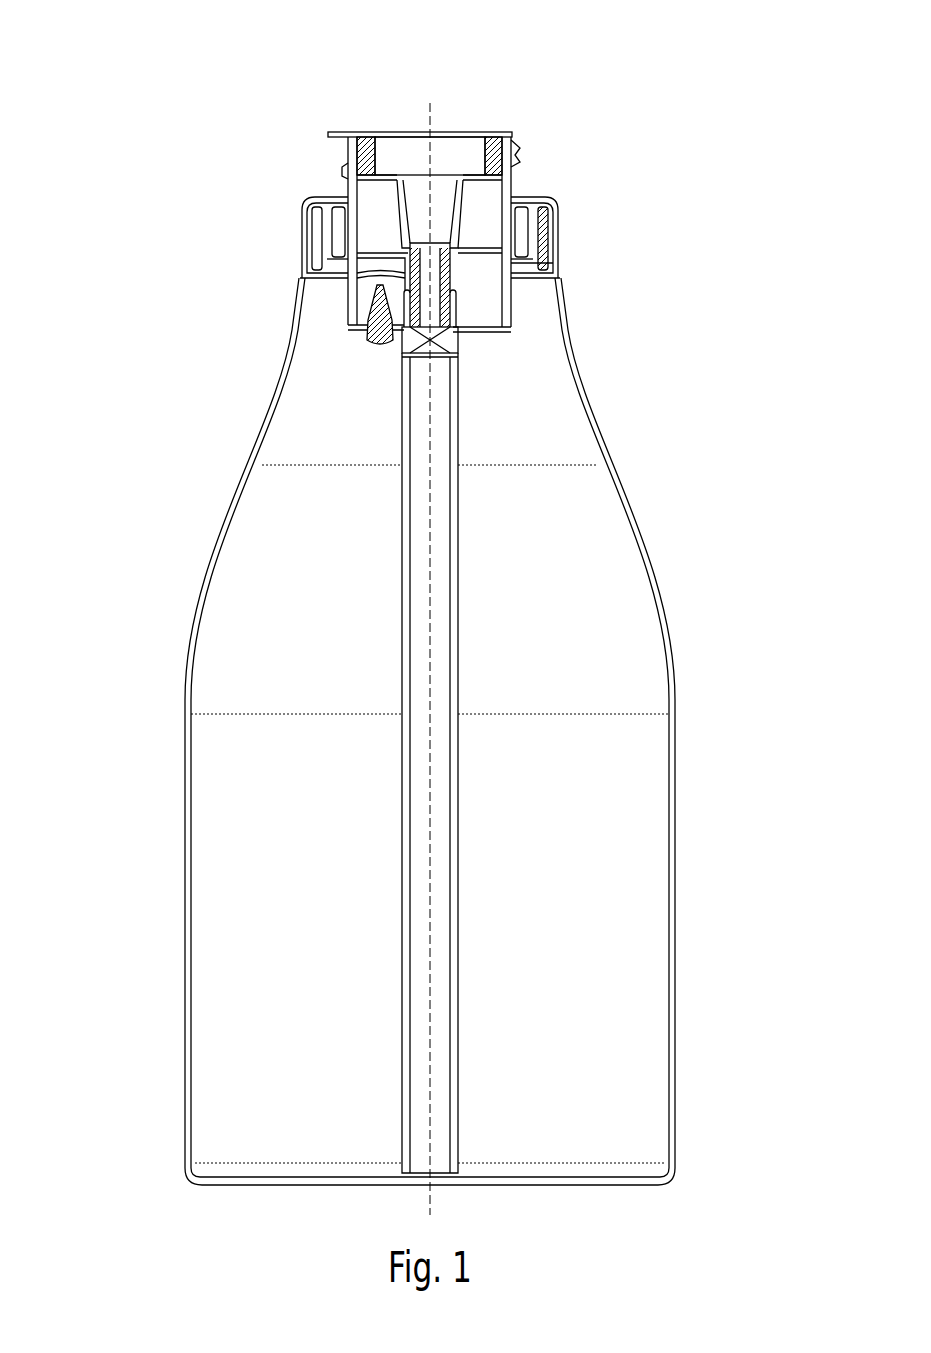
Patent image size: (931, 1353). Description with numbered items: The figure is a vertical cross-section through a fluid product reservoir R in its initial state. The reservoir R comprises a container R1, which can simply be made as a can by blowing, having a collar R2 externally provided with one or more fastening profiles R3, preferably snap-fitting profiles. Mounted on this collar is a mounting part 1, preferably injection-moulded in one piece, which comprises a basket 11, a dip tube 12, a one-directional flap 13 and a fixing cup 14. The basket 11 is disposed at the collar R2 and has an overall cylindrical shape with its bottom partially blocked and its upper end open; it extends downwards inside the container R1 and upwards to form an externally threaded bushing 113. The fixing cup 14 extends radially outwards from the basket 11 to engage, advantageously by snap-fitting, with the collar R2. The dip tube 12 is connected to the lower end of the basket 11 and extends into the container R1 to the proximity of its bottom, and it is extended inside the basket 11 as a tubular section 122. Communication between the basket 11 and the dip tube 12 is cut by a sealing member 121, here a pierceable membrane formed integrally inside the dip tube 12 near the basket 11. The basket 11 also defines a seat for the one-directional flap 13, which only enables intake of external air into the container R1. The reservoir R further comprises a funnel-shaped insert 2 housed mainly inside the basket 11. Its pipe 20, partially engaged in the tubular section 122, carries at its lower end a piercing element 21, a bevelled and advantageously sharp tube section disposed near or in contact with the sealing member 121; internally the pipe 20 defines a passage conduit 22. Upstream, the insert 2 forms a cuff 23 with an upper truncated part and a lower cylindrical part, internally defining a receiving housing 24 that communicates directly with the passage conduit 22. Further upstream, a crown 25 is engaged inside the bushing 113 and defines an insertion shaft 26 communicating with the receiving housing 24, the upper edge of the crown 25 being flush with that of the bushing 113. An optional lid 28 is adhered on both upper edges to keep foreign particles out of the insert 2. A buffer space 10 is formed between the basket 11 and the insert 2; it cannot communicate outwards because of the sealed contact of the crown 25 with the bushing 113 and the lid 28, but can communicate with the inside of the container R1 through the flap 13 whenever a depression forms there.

The mounting part 1 is at (492, 342).
The insert 2 is at (390, 217).
The buffer space 10 is at (548, 258).
The basket 11 is at (520, 303).
The dip tube 12 is at (462, 750).
The one-directional flap 13 is at (362, 352).
The fixing cup 14 is at (545, 193).
The pipe 20 is at (412, 290).
The piercing element 21 is at (418, 338).
The passage conduit 22 is at (418, 272).
The cuff 23 is at (507, 195).
The receiving housing 24 is at (410, 242).
The crown 25 is at (505, 135).
The insertion shaft 26 is at (447, 150).
The lid 28 is at (390, 132).
The bushing 113 is at (348, 170).
The sealing member 121 is at (425, 355).
The tubular section 122 is at (458, 298).
The reservoir R is at (224, 508).
The container R1 is at (662, 600).
The collar R2 is at (548, 210).
The fastening profile R3 is at (548, 250).